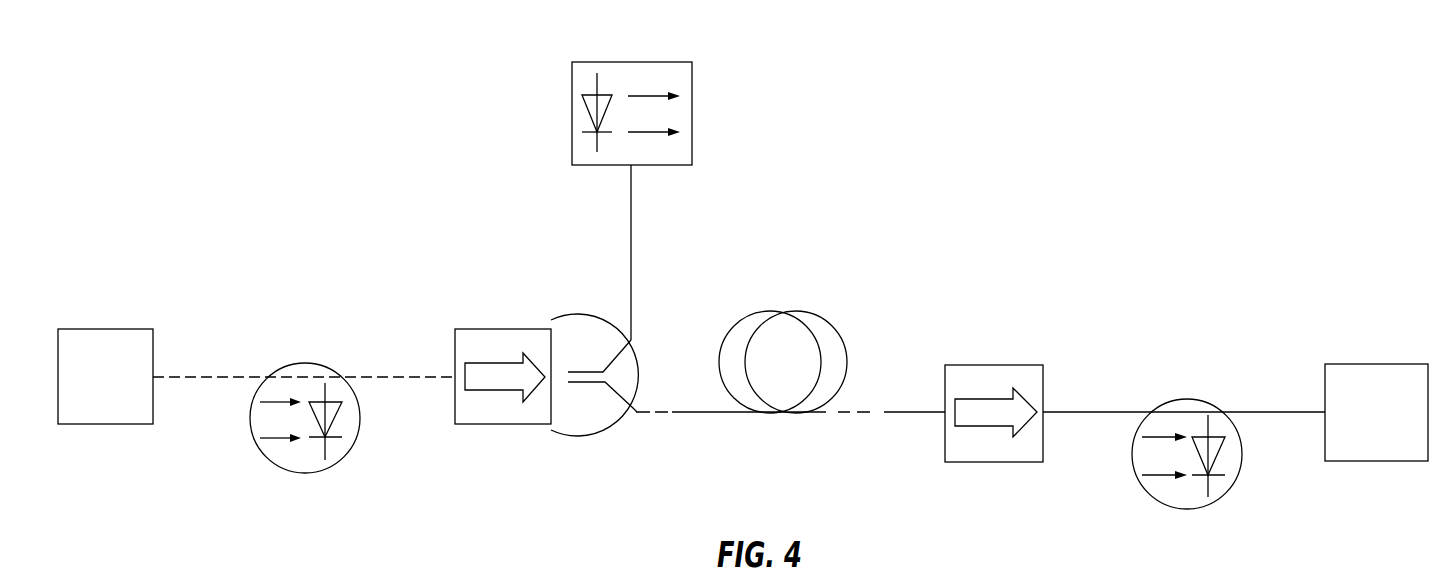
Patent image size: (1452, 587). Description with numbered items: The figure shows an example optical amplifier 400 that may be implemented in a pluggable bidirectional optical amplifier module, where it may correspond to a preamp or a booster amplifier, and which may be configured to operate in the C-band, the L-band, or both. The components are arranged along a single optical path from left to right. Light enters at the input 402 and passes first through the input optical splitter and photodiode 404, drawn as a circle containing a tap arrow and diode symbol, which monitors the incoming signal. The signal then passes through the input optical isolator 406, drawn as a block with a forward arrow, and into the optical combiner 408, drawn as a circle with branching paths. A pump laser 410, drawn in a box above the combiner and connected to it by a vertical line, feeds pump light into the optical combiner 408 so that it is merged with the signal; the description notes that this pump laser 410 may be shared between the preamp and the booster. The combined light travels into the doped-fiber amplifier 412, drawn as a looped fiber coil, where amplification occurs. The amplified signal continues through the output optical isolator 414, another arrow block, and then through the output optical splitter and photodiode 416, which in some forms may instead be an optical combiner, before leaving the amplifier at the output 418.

The optical amplifier 400 is at (1360, 86).
The input 402 is at (114, 329).
The input optical splitter and photodiode 404 is at (305, 364).
The input optical isolator 406 is at (510, 329).
The optical combiner 408 is at (590, 315).
The pump laser 410 is at (627, 62).
The doped-fiber amplifier 412 is at (782, 311).
The output optical isolator 414 is at (1003, 365).
The output optical splitter and photodiode 416 is at (1187, 402).
The output 418 is at (1387, 364).